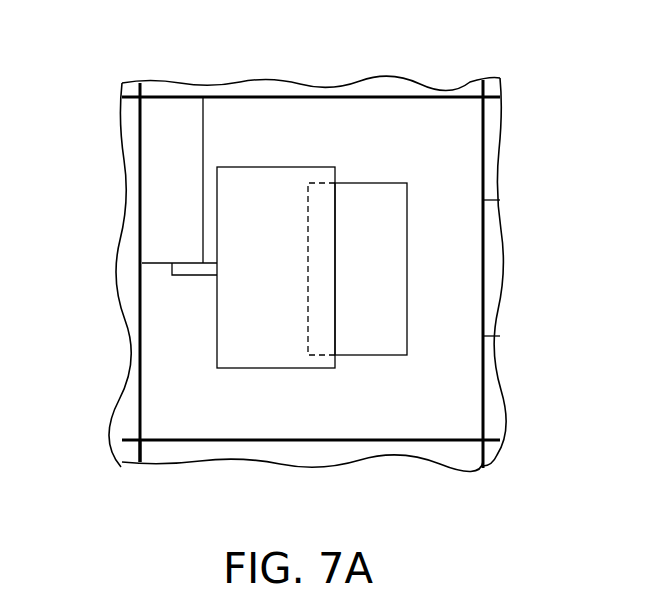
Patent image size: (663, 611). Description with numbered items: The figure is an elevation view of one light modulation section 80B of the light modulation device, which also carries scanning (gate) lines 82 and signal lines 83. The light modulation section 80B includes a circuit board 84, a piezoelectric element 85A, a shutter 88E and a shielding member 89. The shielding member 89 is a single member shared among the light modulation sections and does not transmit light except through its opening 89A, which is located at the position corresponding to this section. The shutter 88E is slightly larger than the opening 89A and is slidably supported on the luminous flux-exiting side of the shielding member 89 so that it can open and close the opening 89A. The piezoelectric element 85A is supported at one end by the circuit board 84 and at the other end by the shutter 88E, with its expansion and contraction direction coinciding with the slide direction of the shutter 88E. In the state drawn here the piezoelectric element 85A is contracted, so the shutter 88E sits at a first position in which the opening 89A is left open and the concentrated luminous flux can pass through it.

The light modulation section 80B is at (395, 128).
The scanning (gate) line 82 is at (187, 441).
The signal line 83 is at (143, 403).
The circuit board 84 is at (170, 128).
The piezoelectric element 85A is at (187, 268).
The shutter 88E is at (262, 175).
The shielding member 89 is at (131, 188).
The opening 89A is at (382, 283).